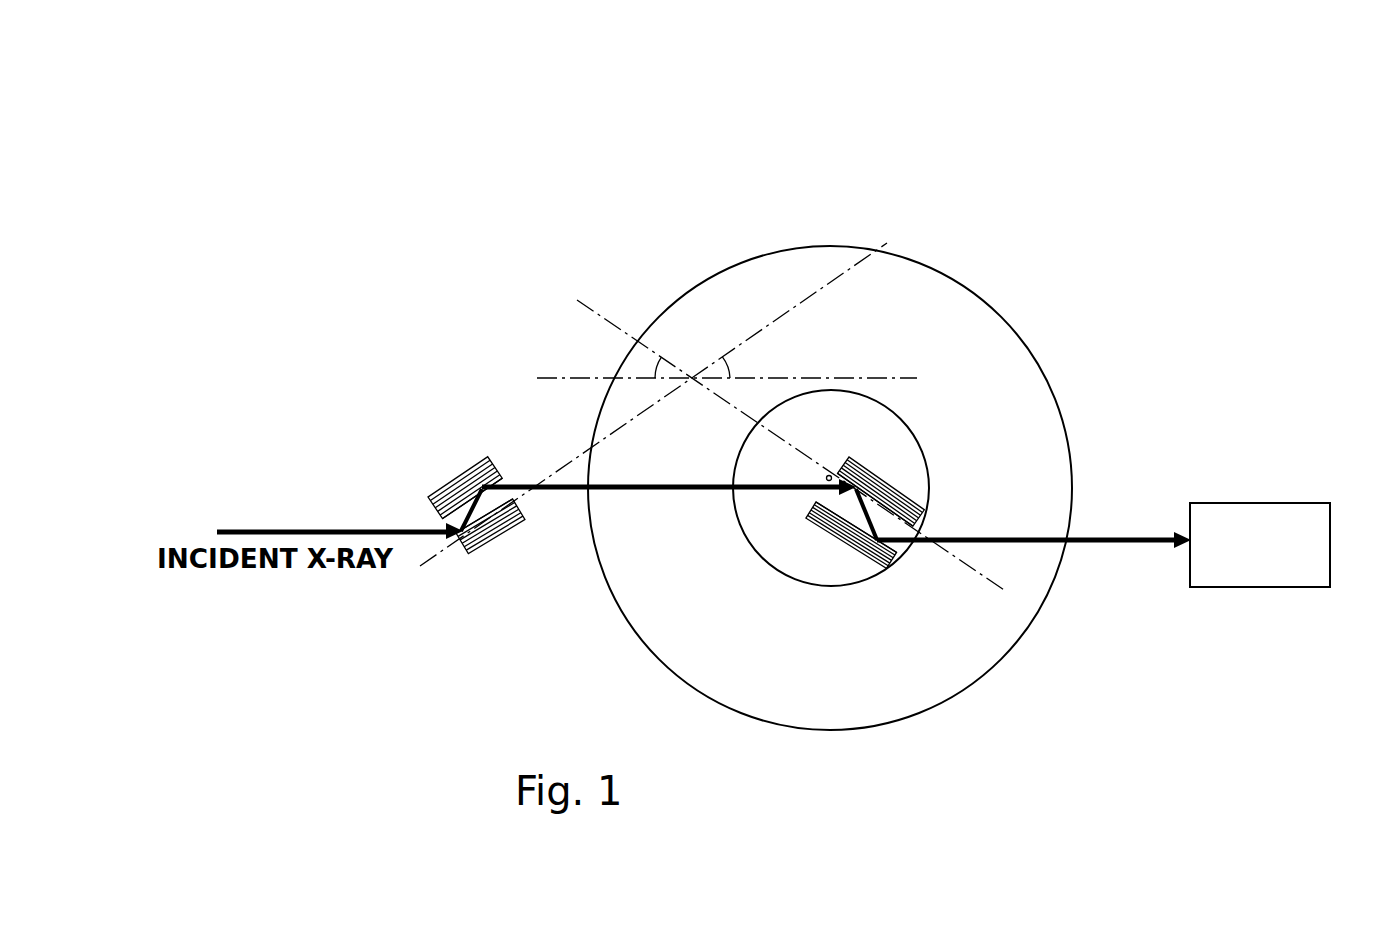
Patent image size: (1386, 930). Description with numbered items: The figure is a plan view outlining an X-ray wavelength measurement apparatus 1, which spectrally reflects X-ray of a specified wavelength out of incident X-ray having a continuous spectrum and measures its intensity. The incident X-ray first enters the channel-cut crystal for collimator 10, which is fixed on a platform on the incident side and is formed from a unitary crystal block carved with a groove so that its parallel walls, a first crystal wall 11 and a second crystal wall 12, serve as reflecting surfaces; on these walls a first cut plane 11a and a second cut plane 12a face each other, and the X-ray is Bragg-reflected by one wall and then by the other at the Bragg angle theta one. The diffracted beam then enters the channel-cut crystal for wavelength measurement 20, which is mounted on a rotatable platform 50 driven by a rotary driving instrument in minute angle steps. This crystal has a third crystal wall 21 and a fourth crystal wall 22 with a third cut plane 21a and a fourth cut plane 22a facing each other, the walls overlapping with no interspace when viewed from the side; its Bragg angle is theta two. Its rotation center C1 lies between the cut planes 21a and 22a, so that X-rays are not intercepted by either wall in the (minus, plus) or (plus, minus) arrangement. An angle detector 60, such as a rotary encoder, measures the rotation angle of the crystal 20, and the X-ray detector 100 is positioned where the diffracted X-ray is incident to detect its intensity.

The X-ray wavelength measurement apparatus 1 is at (640, 186).
The channel-cut crystal for collimator 10 is at (479, 499).
The first crystal wall 11 is at (482, 550).
The first cut plane 11a is at (515, 495).
The second crystal wall 12 is at (427, 500).
The second cut plane 12a is at (503, 484).
The channel-cut crystal for wavelength measurement 20 is at (898, 497).
The third crystal wall 21 is at (839, 469).
The third cut plane 21a is at (922, 518).
The fourth crystal wall 22 is at (831, 534).
The fourth cut plane 22a is at (897, 558).
The rotatable platform 50 is at (919, 438).
The angle detector 60 is at (1032, 352).
The X-ray detector 100 is at (1253, 503).
The rotation center C1 is at (804, 470).